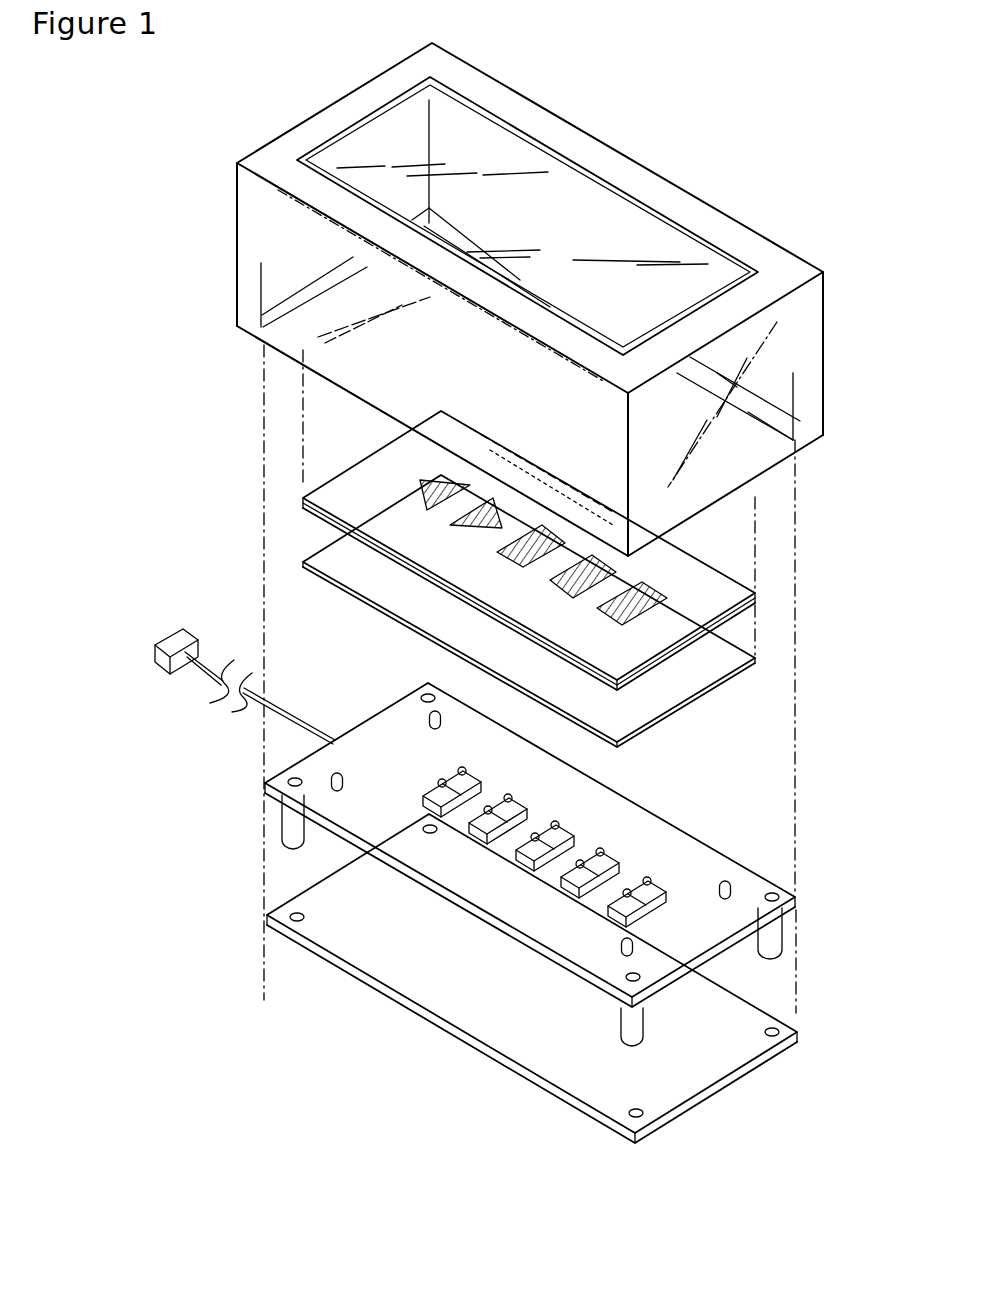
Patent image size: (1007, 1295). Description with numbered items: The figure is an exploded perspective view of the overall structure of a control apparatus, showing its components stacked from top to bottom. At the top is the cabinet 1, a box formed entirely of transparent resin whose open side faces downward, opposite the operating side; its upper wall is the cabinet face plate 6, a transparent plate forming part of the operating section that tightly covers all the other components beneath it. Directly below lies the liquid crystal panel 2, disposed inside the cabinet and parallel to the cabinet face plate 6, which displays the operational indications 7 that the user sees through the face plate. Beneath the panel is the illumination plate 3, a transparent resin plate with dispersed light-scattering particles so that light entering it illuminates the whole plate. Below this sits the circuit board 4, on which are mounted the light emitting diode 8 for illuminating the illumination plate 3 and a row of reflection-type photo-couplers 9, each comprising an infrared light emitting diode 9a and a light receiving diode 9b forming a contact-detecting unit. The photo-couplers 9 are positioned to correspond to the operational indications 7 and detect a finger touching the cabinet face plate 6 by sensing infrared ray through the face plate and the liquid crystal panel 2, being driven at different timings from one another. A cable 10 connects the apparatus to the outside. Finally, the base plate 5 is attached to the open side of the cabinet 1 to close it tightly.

The cabinet 1 is at (216, 201).
The liquid crystal panel 2 is at (365, 478).
The illumination plate 3 is at (340, 563).
The circuit board 4 is at (613, 815).
The base plate 5 is at (437, 977).
The cabinet face plate 6 is at (573, 208).
The operational indications 7 is at (590, 575).
The light emitting diode 8 is at (731, 887).
The reflection-type photo-couplers 9 is at (653, 910).
The infrared light emitting diode 9a is at (441, 794).
The light receiving diode 9b is at (443, 768).
The cable 10 is at (287, 718).